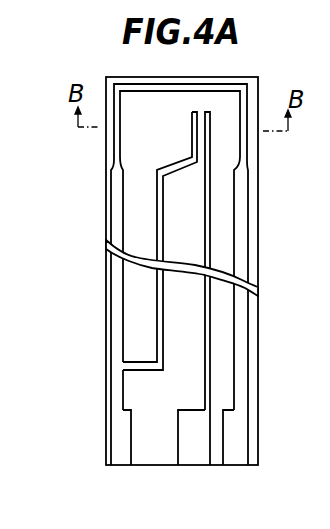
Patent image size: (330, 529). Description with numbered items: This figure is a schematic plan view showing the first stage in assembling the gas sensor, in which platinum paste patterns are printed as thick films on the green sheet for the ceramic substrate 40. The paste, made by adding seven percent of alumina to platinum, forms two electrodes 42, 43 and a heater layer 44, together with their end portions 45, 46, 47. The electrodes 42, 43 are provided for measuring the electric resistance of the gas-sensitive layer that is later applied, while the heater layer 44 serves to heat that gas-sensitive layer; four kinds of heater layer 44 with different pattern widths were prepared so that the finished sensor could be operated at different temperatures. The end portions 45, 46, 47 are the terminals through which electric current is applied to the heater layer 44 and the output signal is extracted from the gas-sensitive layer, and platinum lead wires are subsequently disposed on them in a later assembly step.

The ceramic substrate 40 is at (158, 453).
The electrode 42 is at (192, 124).
The electrode 43 is at (208, 127).
The heater layer 44 is at (125, 83).
The end portion 45 is at (235, 437).
The end portion 46 is at (195, 448).
The end portion 47 is at (123, 437).